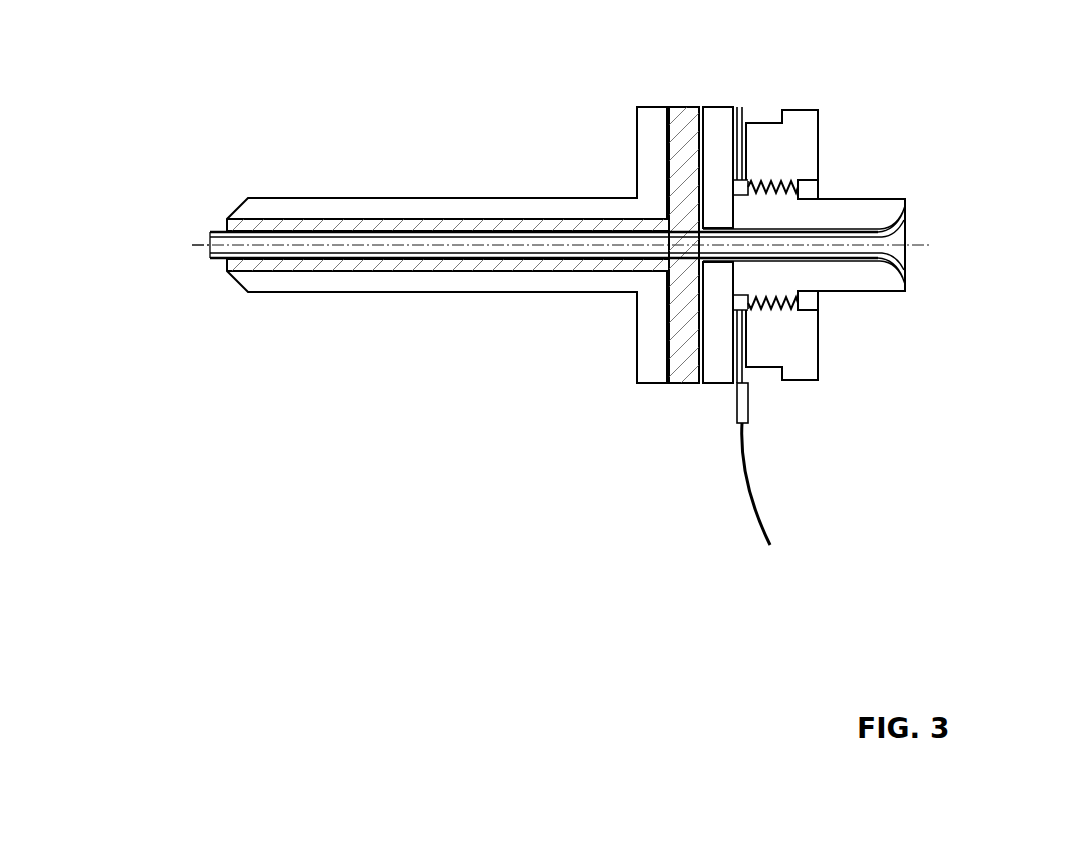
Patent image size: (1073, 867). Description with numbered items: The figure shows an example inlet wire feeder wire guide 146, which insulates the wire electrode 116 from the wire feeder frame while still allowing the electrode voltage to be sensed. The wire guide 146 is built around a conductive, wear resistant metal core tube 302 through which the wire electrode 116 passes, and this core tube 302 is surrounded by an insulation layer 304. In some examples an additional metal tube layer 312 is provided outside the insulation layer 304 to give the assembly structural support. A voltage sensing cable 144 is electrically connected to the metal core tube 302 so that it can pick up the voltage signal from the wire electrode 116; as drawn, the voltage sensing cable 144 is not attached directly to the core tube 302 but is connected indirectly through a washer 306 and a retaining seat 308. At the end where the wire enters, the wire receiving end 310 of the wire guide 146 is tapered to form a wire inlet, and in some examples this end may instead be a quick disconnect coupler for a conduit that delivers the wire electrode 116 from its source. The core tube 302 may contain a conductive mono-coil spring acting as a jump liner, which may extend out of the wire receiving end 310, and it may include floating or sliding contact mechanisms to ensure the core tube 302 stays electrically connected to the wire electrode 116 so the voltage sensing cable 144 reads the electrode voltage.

The wire guide 146 is at (490, 62).
The wire electrode 116 is at (203, 246).
The core tube 302 is at (210, 230).
The insulation layer 304 is at (685, 127).
The washer 306 is at (741, 117).
The retaining seat 308 is at (850, 215).
The wire receiving end 310 is at (905, 256).
The metal tube layer 312 is at (500, 283).
The voltage sensing cable 144 is at (760, 512).